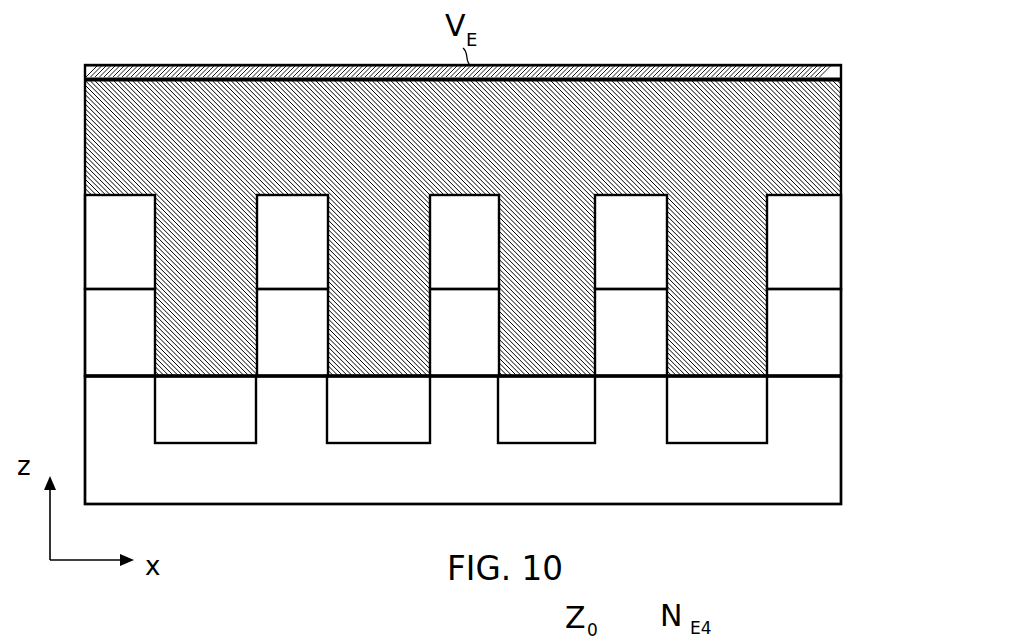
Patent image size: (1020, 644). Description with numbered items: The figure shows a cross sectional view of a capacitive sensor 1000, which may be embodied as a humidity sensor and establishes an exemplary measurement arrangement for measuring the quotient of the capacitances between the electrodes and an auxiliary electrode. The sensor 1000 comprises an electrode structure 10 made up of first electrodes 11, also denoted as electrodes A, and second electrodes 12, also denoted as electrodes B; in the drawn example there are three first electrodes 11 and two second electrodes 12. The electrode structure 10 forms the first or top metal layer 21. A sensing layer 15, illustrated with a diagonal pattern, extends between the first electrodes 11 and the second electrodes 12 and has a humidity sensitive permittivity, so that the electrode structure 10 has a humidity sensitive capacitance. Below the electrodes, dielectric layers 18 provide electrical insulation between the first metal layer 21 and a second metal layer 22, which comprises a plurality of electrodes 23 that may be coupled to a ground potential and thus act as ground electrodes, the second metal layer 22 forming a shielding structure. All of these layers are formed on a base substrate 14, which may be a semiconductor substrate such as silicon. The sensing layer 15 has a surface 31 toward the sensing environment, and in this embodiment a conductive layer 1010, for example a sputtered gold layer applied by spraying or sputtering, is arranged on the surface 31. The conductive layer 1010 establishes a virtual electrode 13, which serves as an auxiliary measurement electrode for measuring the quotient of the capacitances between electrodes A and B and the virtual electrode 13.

The electrode structure 10 is at (64, 242).
The first electrodes 11 is at (106, 265).
The second electrodes 12 is at (312, 266).
The virtual electrode 13 is at (603, 66).
The base substrate 14 is at (815, 458).
The sensing layer 15 is at (827, 147).
The dielectric layers 18 is at (112, 336).
The first metal layer 21 is at (858, 242).
The second metal layer 22 is at (858, 412).
The electrodes 23 is at (346, 422).
The surface 31 is at (204, 70).
The capacitive sensor 1000 is at (849, 578).
The conductive layer 1010 is at (783, 66).